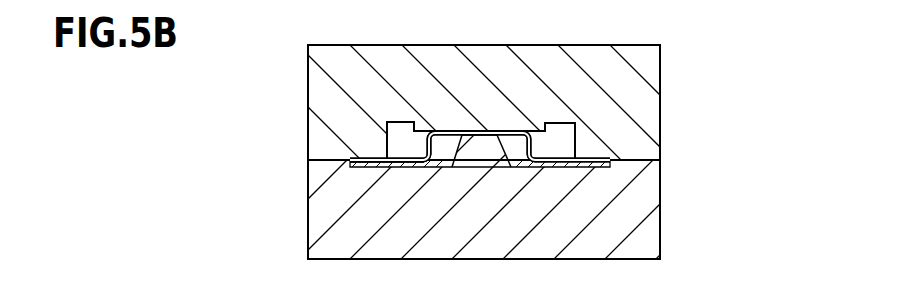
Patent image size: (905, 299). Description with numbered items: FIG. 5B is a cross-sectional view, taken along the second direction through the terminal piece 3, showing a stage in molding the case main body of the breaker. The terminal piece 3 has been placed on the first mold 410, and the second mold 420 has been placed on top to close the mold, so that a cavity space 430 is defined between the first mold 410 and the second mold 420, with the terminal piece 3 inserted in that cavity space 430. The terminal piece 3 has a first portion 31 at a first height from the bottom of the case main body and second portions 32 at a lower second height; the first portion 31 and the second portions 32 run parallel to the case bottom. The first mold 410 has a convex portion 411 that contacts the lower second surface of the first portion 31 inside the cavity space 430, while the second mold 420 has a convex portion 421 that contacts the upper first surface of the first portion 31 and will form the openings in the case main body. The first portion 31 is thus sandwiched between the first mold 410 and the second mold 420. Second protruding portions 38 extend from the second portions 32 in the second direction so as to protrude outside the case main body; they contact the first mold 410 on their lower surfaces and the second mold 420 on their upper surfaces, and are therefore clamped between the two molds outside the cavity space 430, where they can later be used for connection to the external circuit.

The terminal piece 3 is at (428, 150).
The first portion 31 is at (493, 133).
The second portions 32 is at (397, 165).
The second protruding portions 38 is at (353, 161).
The first mold 410 is at (633, 205).
The convex portion 411 is at (486, 148).
The second mold 420 is at (632, 93).
The convex portion 421 is at (447, 129).
The cavity space 430 is at (553, 145).